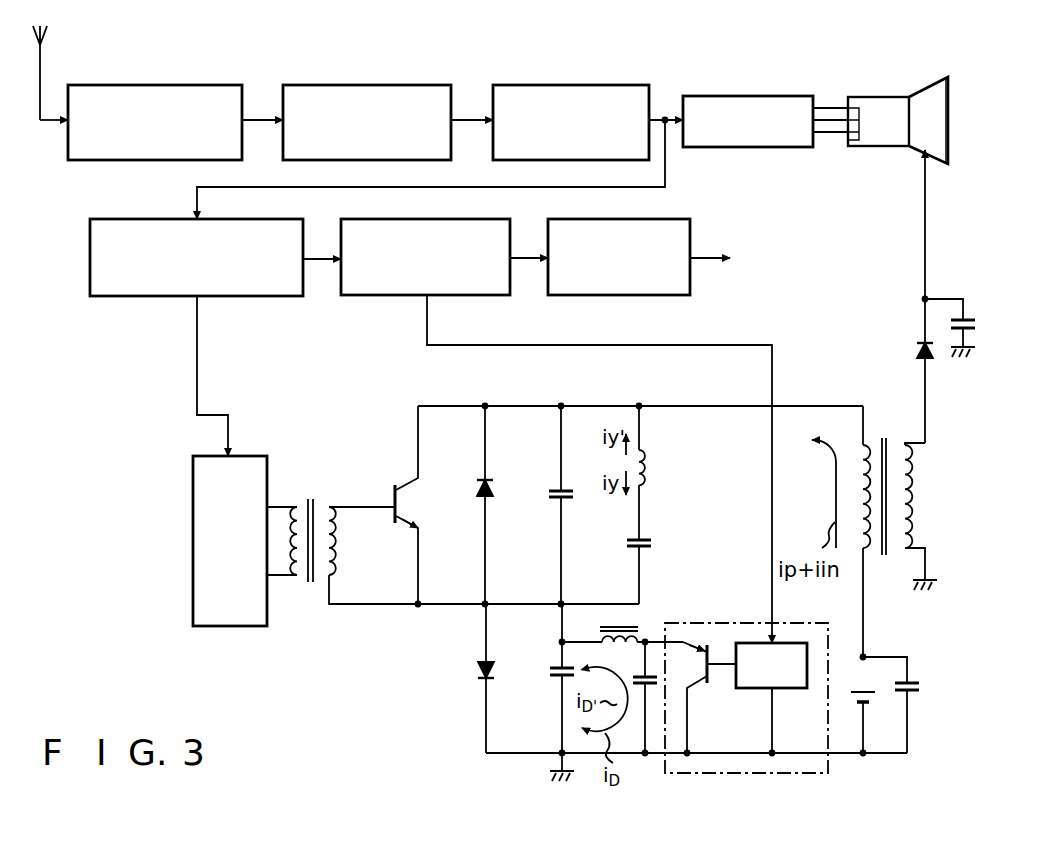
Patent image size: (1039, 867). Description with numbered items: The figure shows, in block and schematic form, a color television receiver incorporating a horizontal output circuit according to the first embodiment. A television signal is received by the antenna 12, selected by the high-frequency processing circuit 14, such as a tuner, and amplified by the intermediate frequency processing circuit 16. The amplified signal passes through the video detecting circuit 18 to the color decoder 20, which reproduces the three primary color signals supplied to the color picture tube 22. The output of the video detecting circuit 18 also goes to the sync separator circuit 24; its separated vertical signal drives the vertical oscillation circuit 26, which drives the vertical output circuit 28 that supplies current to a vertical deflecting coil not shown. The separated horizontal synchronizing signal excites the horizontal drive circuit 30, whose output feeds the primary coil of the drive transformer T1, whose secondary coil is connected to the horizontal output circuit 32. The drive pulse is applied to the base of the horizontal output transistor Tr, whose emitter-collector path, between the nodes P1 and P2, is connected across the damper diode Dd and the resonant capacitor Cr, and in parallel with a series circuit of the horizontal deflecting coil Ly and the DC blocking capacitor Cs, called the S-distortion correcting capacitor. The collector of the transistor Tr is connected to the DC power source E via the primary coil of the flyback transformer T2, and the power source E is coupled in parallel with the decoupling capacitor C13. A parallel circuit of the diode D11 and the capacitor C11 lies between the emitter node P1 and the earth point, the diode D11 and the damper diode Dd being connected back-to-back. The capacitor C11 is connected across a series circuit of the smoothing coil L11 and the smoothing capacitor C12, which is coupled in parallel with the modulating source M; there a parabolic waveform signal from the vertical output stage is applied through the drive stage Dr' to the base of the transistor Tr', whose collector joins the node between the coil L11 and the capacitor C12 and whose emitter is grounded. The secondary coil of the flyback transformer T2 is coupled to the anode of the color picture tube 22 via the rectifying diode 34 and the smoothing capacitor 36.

The antenna 12 is at (48, 37).
The high-frequency (RF) processing circuit 14 is at (154, 85).
The intermediate frequency (IF) processing circuit 16 is at (354, 85).
The video detecting circuit 18 is at (561, 85).
The color decoder 20 is at (738, 96).
The color picture tube 22 is at (882, 96).
The sync separator circuit 24 is at (90, 259).
The vertical oscillation circuit 26 is at (400, 296).
The vertical output circuit 28 is at (622, 296).
The horizontal drive circuit 30 is at (193, 539).
The horizontal output circuit 32 is at (492, 760).
The rectifying diode 34 is at (915, 350).
The capacitor 36 is at (976, 318).
The drive transformer T1 is at (342, 539).
The flyback transformer T2 is at (885, 438).
The horizontal output transistor Tr is at (394, 505).
The transistor Tr' is at (702, 699).
The damper diode Dd is at (501, 505).
The resonant capacitor Cr is at (572, 505).
The horizontal deflecting coil Ly is at (656, 472).
The DC blocking capacitor (S-distortion correcting capacitor) Cs is at (653, 568).
The diode D11 is at (468, 678).
The capacitor C11 is at (546, 692).
The smoothing coil L11 is at (622, 654).
The smoothing capacitor C12 is at (648, 672).
The decoupling capacitor C13 is at (908, 705).
The DC power source E is at (870, 705).
The drive stage Dr' is at (771, 699).
The modulating source M is at (715, 622).
The node P1 is at (567, 602).
The node P2 is at (562, 404).